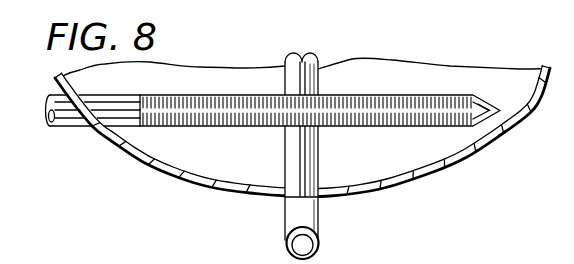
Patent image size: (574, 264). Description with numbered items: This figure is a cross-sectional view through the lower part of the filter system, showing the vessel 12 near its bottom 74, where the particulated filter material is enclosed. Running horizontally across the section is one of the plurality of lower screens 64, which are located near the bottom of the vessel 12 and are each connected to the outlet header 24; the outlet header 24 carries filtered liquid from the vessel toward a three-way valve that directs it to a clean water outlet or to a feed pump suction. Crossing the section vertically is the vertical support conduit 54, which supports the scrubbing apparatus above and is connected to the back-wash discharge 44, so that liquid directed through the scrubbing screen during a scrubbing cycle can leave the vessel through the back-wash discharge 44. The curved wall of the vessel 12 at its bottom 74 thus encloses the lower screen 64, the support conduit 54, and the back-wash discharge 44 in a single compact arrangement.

The vessel 12 is at (168, 174).
The outlet header 24 is at (72, 127).
The back-wash discharge 44 is at (286, 247).
The vertical support conduit 54 is at (287, 58).
The lower screens 64 is at (377, 94).
The bottom of vessel 74 is at (380, 177).